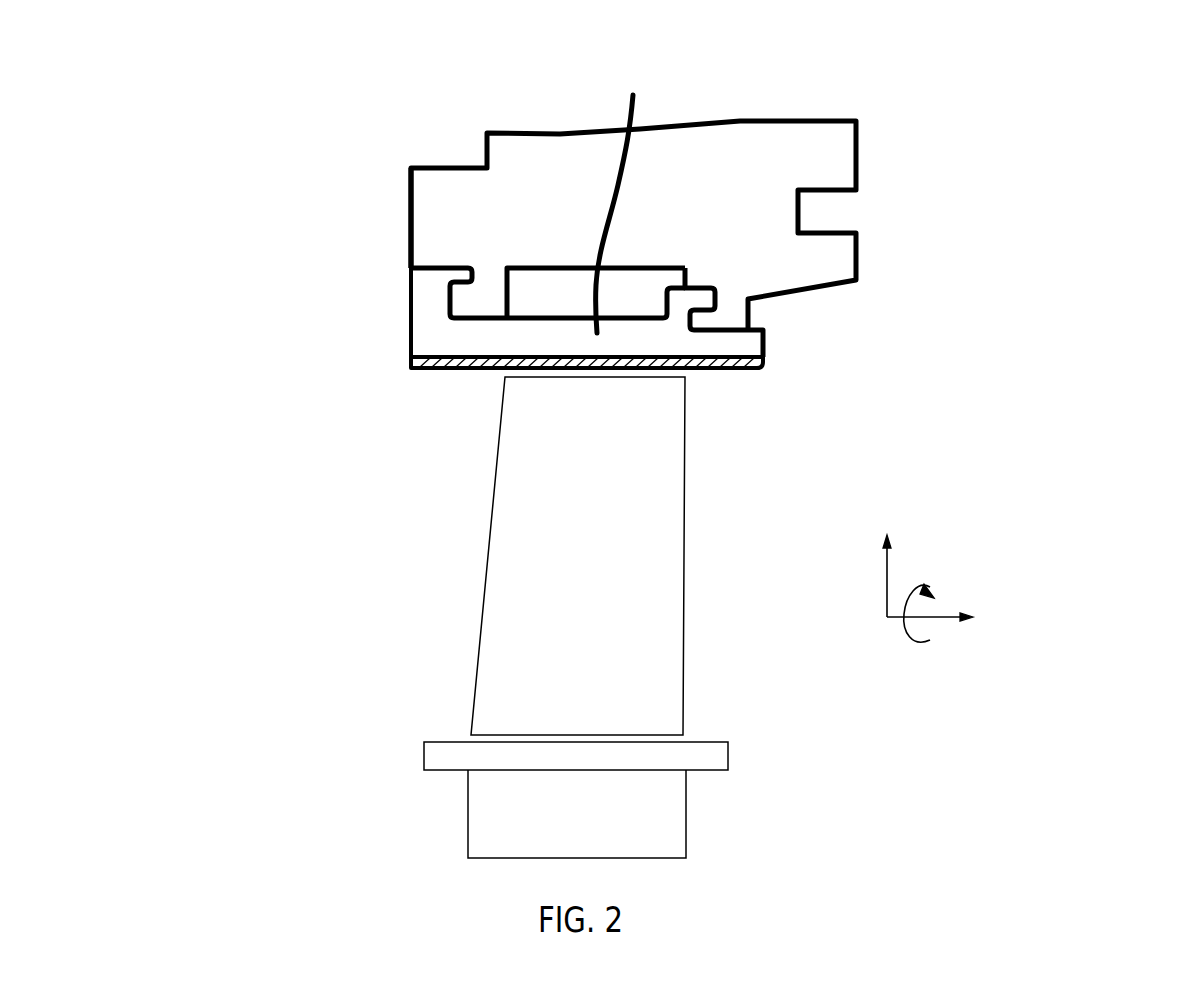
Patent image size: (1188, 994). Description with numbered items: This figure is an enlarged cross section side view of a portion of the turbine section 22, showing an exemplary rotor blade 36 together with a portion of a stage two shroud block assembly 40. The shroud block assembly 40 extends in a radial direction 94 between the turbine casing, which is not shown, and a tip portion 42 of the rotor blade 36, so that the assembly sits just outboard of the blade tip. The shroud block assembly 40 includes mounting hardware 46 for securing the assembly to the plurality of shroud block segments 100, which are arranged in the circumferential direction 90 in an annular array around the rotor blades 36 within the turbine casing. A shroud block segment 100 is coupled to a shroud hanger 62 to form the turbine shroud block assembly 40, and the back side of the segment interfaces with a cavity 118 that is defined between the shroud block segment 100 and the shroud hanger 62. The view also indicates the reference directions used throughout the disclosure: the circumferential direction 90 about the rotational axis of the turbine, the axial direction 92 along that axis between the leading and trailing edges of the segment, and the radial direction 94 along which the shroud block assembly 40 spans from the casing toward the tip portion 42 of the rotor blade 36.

The turbine section 22 is at (1002, 230).
The rotor blade 36 is at (601, 568).
The shroud block assembly 40 is at (377, 258).
The tip portion 42 is at (685, 375).
The mounting hardware 46 is at (482, 300).
The shroud hanger 62 is at (465, 212).
The circumferential direction 90 is at (906, 630).
The axial direction 92 is at (944, 612).
The radial direction 94 is at (887, 576).
The shroud block segment 100 is at (621, 188).
The cavity 118 is at (625, 283).